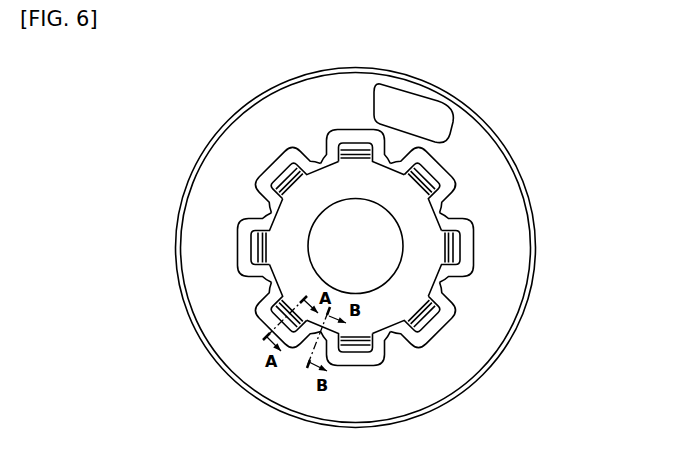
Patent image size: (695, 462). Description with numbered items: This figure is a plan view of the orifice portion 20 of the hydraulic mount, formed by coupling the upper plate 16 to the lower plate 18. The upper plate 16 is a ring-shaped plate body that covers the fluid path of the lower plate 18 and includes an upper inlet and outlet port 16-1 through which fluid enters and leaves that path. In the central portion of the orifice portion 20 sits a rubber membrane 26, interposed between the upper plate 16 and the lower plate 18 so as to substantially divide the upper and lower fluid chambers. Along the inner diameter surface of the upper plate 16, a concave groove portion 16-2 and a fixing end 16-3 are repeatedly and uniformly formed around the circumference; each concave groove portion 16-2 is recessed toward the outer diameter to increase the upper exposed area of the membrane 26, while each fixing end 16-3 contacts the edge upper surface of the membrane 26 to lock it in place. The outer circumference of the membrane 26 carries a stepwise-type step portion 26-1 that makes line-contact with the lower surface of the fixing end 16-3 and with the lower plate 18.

The upper plate 16 is at (288, 122).
The upper inlet and outlet port 16-1 is at (400, 96).
The concave groove portion 16-2 is at (288, 170).
The fixing end 16-3 is at (270, 213).
The lower plate 18 is at (514, 147).
The orifice portion 20 is at (488, 96).
The membrane 26 is at (424, 228).
The stepwise-type step portion 26-1 is at (455, 248).